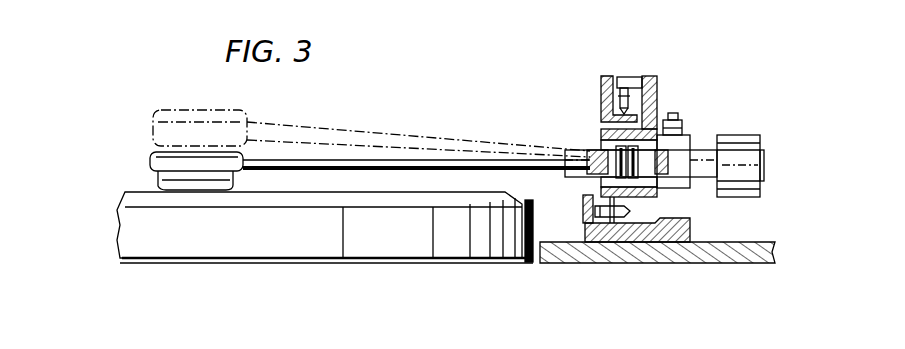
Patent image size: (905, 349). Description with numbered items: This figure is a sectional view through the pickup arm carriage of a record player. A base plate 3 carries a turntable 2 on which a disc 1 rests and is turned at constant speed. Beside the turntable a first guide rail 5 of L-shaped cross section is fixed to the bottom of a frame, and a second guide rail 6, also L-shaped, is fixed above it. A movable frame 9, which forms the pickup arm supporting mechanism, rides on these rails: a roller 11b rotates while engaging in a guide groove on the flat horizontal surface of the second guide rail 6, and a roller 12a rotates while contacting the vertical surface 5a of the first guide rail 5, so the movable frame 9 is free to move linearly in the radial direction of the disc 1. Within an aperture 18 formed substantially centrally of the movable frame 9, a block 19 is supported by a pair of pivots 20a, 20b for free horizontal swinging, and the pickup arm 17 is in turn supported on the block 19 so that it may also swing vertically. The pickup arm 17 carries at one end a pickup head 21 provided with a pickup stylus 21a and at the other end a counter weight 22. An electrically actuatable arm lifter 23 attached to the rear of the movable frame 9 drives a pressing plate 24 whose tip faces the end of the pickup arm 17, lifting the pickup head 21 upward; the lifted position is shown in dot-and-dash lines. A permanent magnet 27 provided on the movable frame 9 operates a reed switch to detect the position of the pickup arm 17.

The disc 1 is at (283, 195).
The turntable 2 is at (413, 243).
The base plate 3 is at (657, 245).
The first guide rail 5 is at (660, 238).
The vertical surface 5a is at (590, 218).
The second guide rail 6 is at (603, 80).
The movable frame 9 is at (658, 85).
The roller 11b is at (632, 88).
The roller 12a is at (615, 220).
The pickup arm 17 is at (388, 160).
The aperture 18 is at (588, 152).
The block 19 is at (622, 176).
The pivot 20a is at (601, 148).
The pivot 20b is at (660, 183).
The pickup head 21 is at (150, 162).
The pickup stylus 21a is at (160, 188).
The counter weight 22 is at (762, 164).
The arm lifter 23 is at (700, 138).
The pressing plate 24 is at (683, 118).
The permanent magnet 27 is at (632, 77).